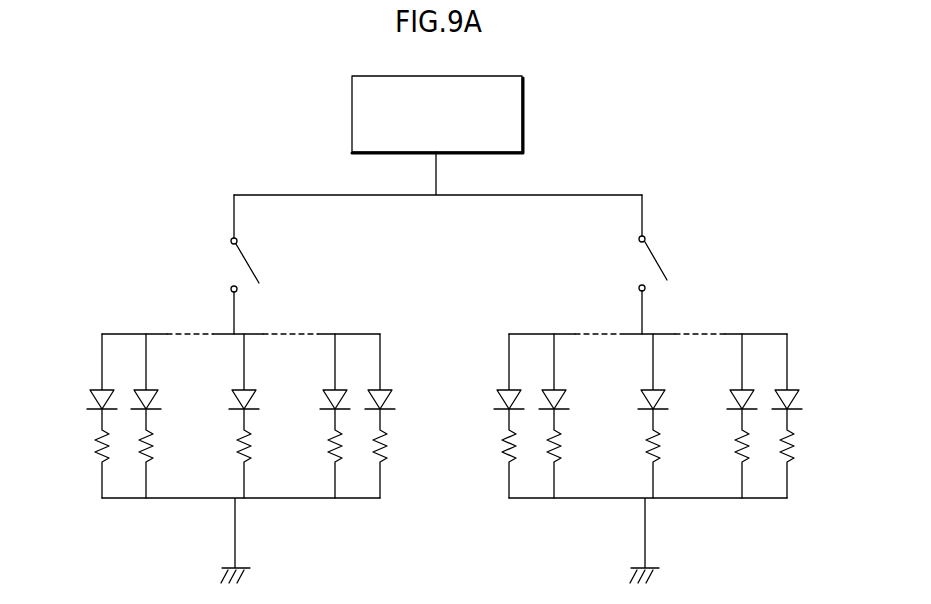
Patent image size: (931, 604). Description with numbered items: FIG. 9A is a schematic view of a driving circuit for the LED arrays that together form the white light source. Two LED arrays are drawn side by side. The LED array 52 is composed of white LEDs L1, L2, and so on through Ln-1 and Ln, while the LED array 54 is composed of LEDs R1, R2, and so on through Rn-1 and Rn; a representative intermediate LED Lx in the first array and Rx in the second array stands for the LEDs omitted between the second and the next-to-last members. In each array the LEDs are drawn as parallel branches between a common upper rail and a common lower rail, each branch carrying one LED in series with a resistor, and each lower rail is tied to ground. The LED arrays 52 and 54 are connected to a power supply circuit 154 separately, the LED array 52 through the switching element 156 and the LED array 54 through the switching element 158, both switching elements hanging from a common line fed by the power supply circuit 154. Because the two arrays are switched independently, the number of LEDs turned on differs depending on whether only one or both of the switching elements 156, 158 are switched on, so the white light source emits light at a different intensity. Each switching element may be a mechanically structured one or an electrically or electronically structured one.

The power supply circuit 154 is at (523, 78).
The switching element 156 is at (283, 268).
The switching element 158 is at (676, 267).
The LED array 52 is at (241, 463).
The LED array 54 is at (647, 462).
The white LED L1 is at (97, 390).
The white LED L2 is at (145, 390).
The left LED x Lx is at (252, 398).
The white LED Ln-1 is at (332, 390).
The white LED Ln is at (383, 390).
The LED R1 is at (505, 390).
The LED R2 is at (555, 390).
The right LED x Rx is at (660, 398).
The LED Rn-1 is at (738, 388).
The LED Rn is at (790, 388).